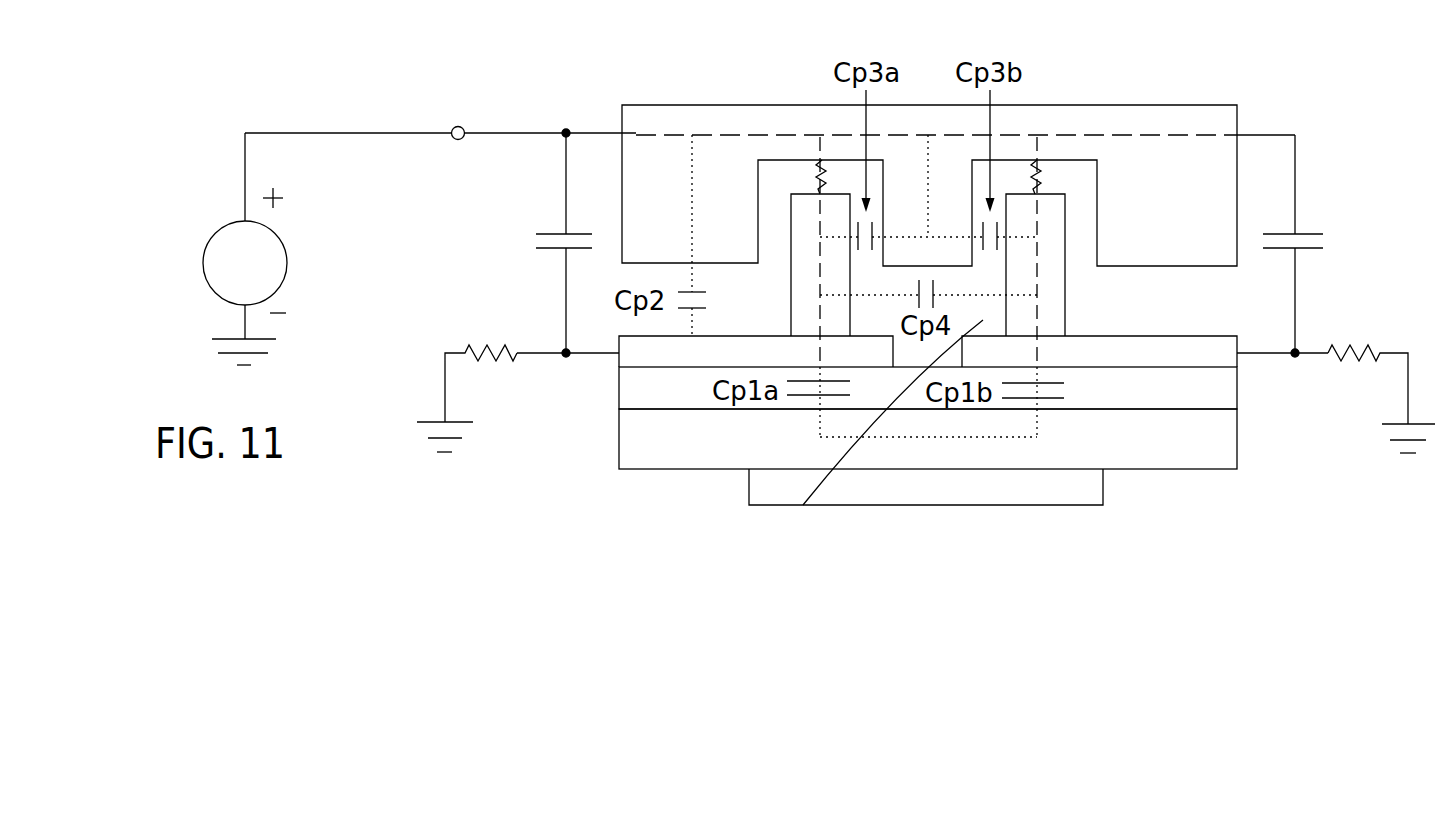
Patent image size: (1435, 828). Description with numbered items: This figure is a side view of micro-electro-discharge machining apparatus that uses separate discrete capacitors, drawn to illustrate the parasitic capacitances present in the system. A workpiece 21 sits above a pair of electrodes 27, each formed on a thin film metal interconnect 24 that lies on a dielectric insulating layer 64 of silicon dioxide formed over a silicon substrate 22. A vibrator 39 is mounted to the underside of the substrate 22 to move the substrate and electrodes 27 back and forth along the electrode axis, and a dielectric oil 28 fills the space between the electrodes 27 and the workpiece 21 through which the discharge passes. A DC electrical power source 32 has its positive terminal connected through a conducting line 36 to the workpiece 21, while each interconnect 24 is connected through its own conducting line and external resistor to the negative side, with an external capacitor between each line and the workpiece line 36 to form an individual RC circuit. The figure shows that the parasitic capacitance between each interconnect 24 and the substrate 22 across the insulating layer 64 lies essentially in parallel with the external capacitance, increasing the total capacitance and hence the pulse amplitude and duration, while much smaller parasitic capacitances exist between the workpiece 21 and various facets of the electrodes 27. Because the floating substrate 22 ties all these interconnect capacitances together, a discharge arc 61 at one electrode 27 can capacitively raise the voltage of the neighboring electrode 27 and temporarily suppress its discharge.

The workpiece 21 is at (1165, 103).
The substrate 22 is at (1164, 456).
The conductive base interconnect 24 is at (1185, 338).
The electrode 27 is at (787, 283).
The dielectric oil 28 is at (886, 428).
The DC electrical power source 32 is at (210, 240).
The conducting line 36 is at (592, 133).
The vibrator 39 is at (1103, 505).
The discharge arc 61 is at (800, 166).
The dielectric insulating layer 64 is at (640, 392).